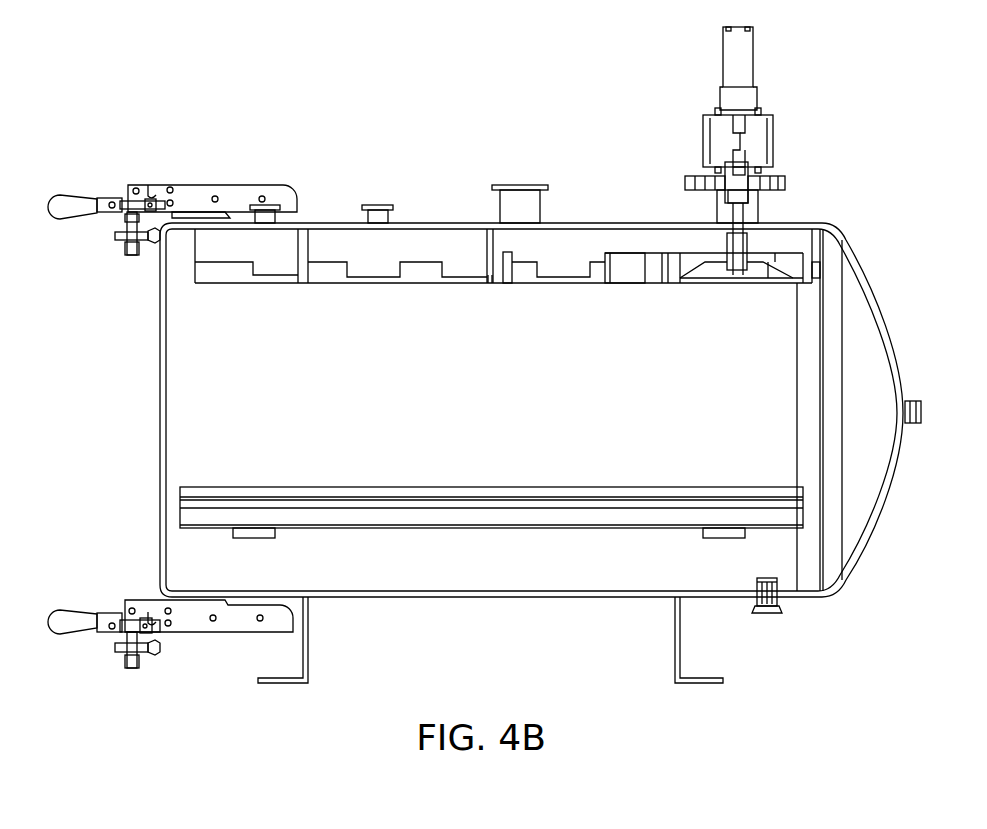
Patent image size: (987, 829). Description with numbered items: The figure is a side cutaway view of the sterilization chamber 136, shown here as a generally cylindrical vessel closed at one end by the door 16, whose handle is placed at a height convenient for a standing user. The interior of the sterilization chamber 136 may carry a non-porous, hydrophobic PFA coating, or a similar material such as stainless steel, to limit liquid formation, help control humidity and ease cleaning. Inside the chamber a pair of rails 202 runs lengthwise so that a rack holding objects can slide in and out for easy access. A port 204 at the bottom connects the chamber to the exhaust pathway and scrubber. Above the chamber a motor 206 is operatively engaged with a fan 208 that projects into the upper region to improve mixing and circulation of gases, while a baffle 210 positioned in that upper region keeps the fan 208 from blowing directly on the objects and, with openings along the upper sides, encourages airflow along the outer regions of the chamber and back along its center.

The door 16 is at (905, 390).
The sterilization chamber 136 is at (603, 258).
The rails 202 is at (797, 511).
The port 204 is at (780, 606).
The motor 206 is at (773, 139).
The fan 208 is at (768, 272).
The baffle 210 is at (420, 272).